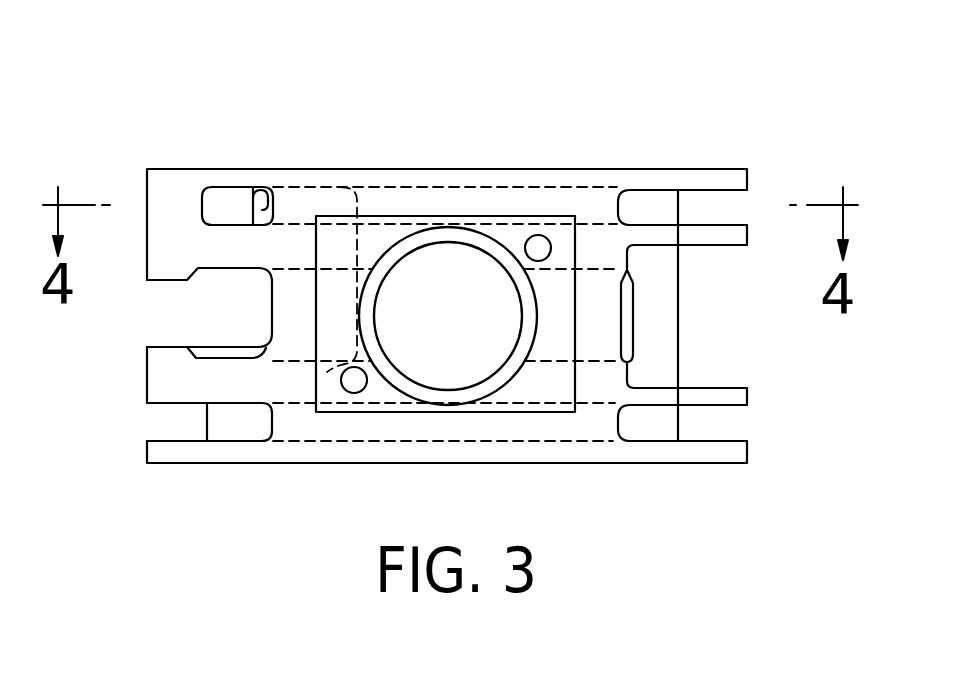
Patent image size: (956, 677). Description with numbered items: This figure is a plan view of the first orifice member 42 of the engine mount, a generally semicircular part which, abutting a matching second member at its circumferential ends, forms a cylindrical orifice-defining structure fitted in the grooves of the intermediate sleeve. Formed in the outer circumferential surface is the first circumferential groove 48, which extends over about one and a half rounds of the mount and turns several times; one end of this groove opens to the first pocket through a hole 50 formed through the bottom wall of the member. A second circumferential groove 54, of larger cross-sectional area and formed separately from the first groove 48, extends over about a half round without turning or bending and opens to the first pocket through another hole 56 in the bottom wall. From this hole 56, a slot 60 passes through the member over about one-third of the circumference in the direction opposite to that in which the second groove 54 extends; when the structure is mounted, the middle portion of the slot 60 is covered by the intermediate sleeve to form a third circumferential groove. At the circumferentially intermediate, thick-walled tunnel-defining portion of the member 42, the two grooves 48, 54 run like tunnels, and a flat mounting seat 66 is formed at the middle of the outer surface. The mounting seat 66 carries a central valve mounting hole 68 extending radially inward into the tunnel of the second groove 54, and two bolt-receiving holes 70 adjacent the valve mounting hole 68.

The first orifice member 42 is at (578, 92).
The first circumferential groove 48 is at (712, 203).
The hole 50 is at (265, 190).
The second circumferential groove 54 is at (720, 388).
The hole 56 is at (327, 372).
The slot 60 is at (170, 282).
The flat mounting seat 66 is at (552, 387).
The valve mounting hole 68 is at (414, 262).
The holes for receiving bolts 70 is at (538, 236).